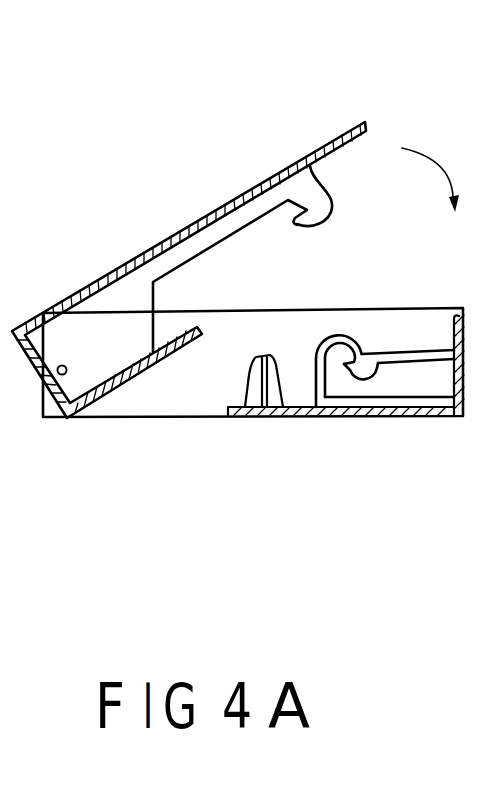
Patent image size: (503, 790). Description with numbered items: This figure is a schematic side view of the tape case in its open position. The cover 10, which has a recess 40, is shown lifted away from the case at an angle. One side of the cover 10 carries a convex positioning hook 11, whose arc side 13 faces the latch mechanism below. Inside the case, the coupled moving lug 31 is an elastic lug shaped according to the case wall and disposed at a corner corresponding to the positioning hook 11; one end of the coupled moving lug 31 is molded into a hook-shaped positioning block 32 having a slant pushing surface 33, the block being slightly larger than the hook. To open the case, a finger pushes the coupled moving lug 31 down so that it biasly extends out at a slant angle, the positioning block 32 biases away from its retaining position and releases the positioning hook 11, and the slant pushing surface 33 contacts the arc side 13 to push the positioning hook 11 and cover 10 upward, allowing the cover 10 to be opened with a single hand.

The cover 10 is at (322, 152).
The positioning hook 11 is at (309, 217).
The arc side 13 is at (333, 207).
The coupled moving lug 31 is at (435, 378).
The positioning block 32 is at (335, 363).
The slant pushing surface 33 is at (367, 378).
The recess 40 is at (103, 348).